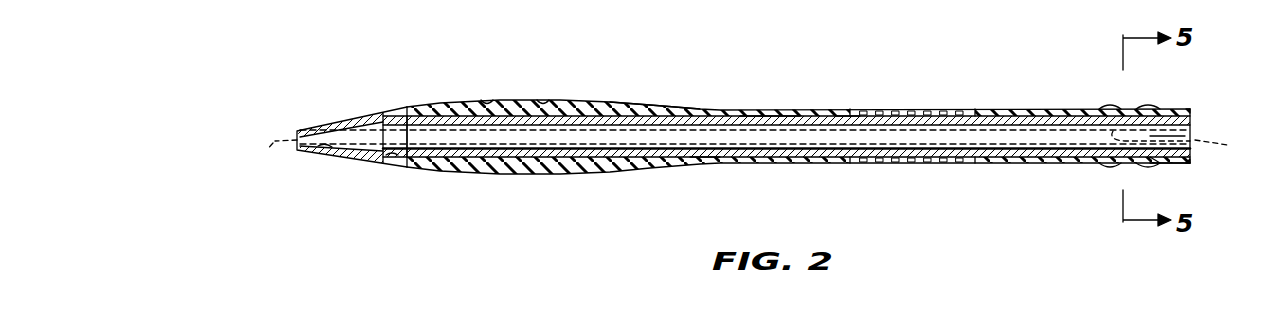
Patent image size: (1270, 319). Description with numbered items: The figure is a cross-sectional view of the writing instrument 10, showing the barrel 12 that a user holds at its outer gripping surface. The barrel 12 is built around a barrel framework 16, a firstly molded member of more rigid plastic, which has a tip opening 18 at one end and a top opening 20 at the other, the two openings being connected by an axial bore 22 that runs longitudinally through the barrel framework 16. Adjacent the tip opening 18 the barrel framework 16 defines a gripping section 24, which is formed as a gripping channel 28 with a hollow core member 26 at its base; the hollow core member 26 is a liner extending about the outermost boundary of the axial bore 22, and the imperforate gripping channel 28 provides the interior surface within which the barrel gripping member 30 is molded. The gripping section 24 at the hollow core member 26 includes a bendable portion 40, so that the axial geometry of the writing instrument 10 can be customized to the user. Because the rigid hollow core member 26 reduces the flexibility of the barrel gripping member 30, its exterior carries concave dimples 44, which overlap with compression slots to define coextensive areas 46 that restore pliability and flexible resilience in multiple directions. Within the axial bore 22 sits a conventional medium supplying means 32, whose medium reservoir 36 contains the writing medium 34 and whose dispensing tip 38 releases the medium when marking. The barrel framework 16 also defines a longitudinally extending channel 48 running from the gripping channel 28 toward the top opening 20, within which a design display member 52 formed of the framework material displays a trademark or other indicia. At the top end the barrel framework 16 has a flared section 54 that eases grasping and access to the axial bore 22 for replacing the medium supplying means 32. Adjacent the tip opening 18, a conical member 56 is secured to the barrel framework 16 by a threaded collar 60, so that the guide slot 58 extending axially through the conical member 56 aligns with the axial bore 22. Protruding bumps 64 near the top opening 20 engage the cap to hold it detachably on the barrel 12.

The writing instrument 10 is at (760, 162).
The barrel 12 is at (707, 112).
The barrel framework 16 is at (827, 157).
The tip opening 18 is at (393, 120).
The top opening 20 is at (1193, 127).
The axial bore 22 is at (1000, 128).
The gripping section 24 is at (513, 126).
The hollow core member 26 is at (563, 121).
The gripping channel 28 is at (417, 107).
The barrel gripping member 30 is at (633, 108).
The medium supplying means 32 is at (1160, 130).
The writing medium 34 is at (812, 138).
The medium reservoir 36 is at (680, 137).
The dispensing tip 38 is at (275, 142).
The bendable portion 40 is at (789, 120).
The concave dimples 44 is at (487, 101).
The coextensive areas 46 is at (543, 100).
The longitudinally extending channel 48 is at (847, 120).
The design display member 52 is at (927, 112).
The flared section 54 is at (1173, 163).
The conical member 56 is at (352, 119).
The guide slot 58 is at (330, 152).
The threaded collar 60 is at (393, 153).
The protruding bumps 64 is at (1145, 108).